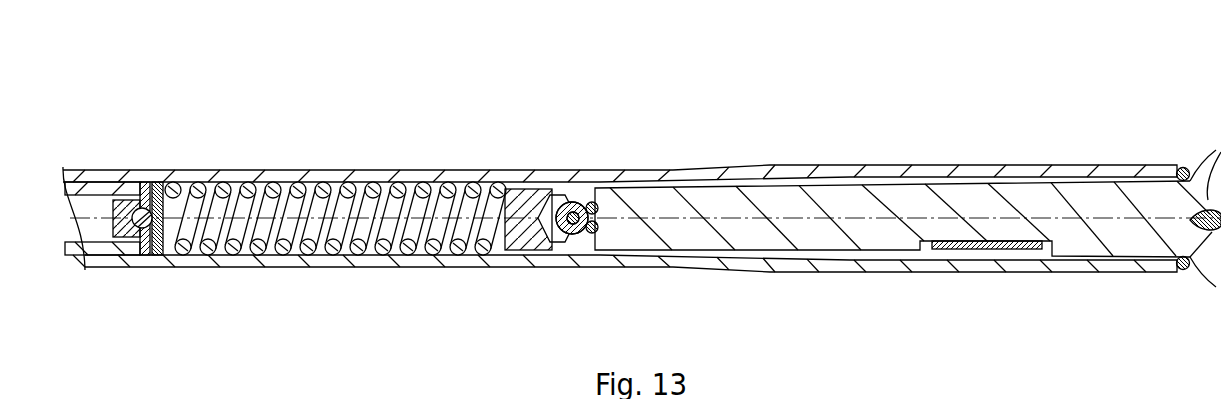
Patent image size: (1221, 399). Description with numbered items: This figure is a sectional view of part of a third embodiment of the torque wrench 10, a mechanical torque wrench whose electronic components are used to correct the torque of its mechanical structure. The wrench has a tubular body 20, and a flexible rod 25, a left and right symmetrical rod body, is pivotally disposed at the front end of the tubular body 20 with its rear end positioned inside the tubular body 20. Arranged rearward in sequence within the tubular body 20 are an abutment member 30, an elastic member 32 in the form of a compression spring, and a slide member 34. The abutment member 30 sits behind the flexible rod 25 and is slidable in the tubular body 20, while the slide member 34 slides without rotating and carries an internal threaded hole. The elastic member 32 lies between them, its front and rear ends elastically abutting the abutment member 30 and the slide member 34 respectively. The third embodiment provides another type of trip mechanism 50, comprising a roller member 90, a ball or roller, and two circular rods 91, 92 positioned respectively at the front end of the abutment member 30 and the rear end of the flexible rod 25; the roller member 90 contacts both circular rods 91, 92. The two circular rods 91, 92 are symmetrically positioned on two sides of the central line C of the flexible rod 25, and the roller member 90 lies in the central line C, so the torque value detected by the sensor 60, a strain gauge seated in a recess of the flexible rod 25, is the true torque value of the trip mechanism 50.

The torque wrench 10 is at (1088, 117).
The tubular body 20 is at (937, 166).
The flexible rod 25 is at (1099, 243).
The abutment member 30 is at (517, 198).
The elastic member 32 is at (322, 184).
The slide member 34 is at (100, 188).
The trip mechanism 50 is at (580, 184).
The torque sensor 60 is at (985, 243).
The roller member 90 is at (581, 235).
The circular rod 91 is at (595, 204).
The circular rod 92 is at (597, 230).
The central line C is at (787, 217).